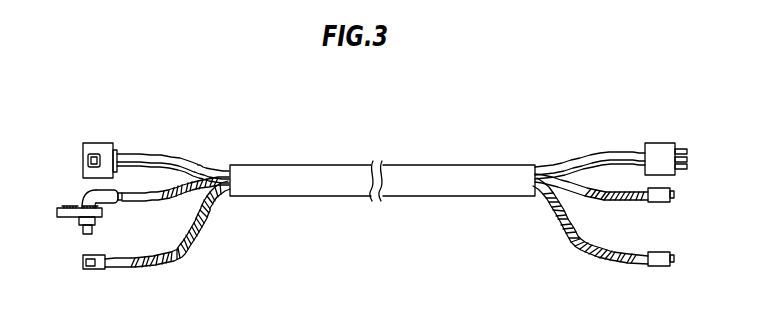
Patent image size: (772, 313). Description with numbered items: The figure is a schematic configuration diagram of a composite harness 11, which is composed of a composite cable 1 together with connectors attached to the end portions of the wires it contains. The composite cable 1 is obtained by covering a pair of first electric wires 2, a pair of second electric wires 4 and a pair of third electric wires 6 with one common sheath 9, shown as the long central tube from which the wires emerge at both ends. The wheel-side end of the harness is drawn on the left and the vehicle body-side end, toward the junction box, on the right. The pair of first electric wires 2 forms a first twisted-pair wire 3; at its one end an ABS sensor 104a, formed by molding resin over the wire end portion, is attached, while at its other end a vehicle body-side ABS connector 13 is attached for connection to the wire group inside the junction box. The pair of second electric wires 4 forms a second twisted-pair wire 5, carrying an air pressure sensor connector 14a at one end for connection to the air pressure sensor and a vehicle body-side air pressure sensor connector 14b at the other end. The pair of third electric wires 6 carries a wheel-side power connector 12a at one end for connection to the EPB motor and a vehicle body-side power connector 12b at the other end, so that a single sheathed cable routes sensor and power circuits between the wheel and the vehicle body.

The composite cable 1 is at (402, 158).
The first electric wires 2 is at (151, 204).
The first twisted-pair wire 3 is at (166, 200).
The second electric wires 4 is at (158, 265).
The second twisted-pair wire 5 is at (180, 258).
The third electric wires 6 is at (144, 156).
The sheath 9 is at (477, 190).
The composite harness 11 is at (499, 117).
The wheel-side power connector 12a is at (83, 162).
The vehicle body-side power connector 12b is at (688, 163).
The vehicle body-side ABS connector 13 is at (674, 194).
The air pressure sensor connector 14a is at (83, 261).
The vehicle body-side air pressure sensor connector 14b is at (674, 258).
The ABS sensor 104a is at (83, 195).